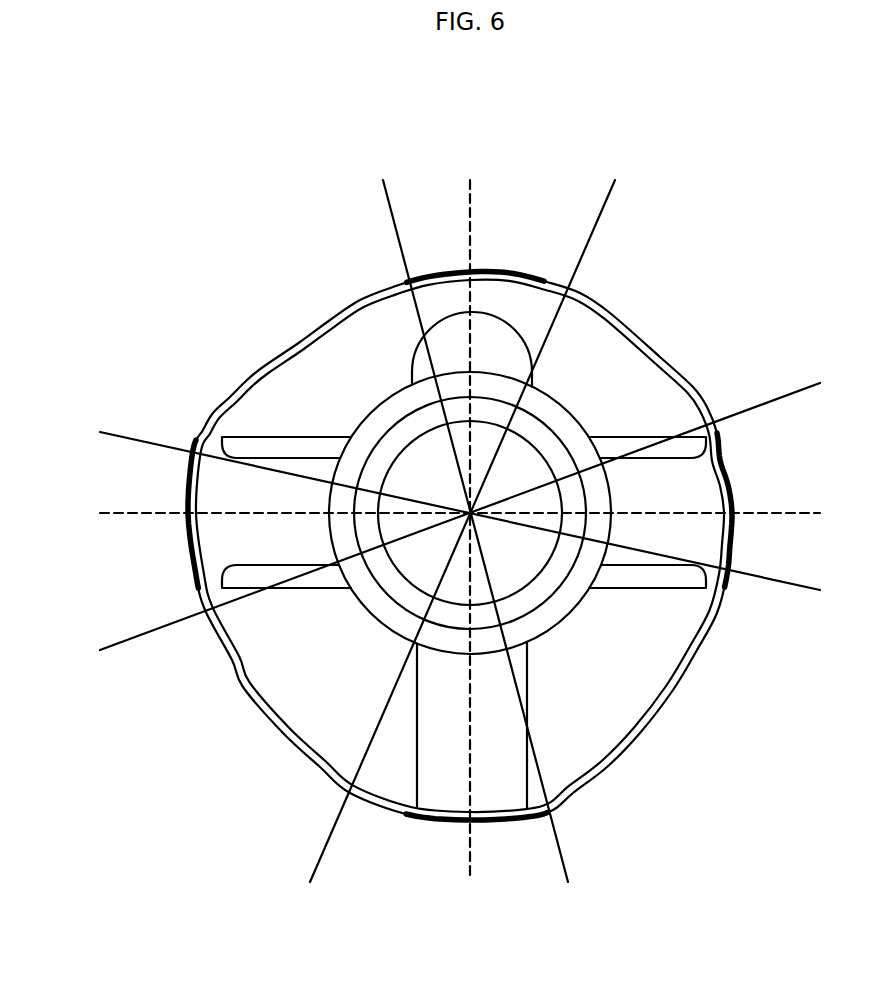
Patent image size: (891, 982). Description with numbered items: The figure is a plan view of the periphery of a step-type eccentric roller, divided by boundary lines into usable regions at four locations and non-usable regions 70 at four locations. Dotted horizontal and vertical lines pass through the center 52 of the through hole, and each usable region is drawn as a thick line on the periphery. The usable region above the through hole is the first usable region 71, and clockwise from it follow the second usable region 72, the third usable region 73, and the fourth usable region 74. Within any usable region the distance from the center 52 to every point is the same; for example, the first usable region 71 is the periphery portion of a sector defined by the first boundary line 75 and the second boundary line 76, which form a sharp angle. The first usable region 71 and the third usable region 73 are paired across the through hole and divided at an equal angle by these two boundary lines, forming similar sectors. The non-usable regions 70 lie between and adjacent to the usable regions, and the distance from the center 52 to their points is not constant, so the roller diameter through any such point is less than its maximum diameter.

The center of the through hole 52 is at (380, 440).
The non-usable regions 70 is at (260, 370).
The first usable region 71 is at (505, 270).
The second usable region 72 is at (737, 462).
The third usable region 73 is at (420, 820).
The fourth usable region 74 is at (187, 560).
The first boundary line 75 is at (385, 202).
The second boundary line 76 is at (605, 215).